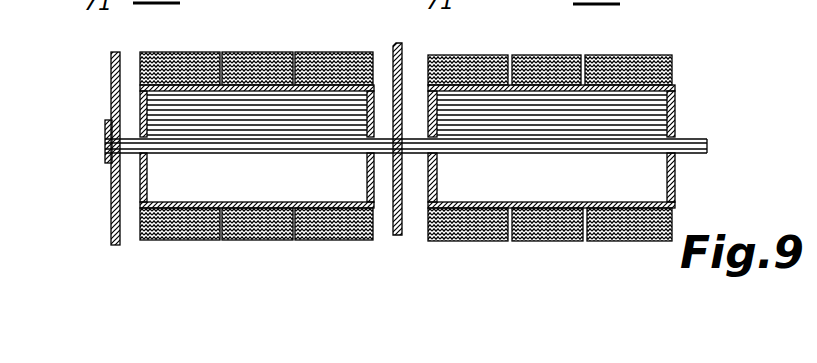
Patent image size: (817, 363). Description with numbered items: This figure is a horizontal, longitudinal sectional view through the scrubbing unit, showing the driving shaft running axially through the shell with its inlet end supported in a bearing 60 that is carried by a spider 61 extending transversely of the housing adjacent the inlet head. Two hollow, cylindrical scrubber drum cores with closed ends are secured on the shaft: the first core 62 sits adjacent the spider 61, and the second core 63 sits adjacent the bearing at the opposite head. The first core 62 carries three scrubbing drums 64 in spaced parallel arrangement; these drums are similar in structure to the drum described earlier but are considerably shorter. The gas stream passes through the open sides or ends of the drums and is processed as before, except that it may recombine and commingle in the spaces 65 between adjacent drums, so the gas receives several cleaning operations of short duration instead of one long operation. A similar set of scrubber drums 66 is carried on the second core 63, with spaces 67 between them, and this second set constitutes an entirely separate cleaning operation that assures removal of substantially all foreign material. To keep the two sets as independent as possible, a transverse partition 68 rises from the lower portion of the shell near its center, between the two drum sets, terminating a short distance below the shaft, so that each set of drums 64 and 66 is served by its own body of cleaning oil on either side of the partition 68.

The bearing 60 is at (108, 125).
The spider 61 is at (110, 68).
The scrubber drum core 62 is at (170, 177).
The scrubber drum core 63 is at (677, 100).
The scrubbing drums 64 is at (318, 53).
The spaces 65 is at (293, 243).
The scrubber drums 66 is at (618, 55).
The spaces 67 is at (585, 245).
The transverse partition 68 is at (398, 43).